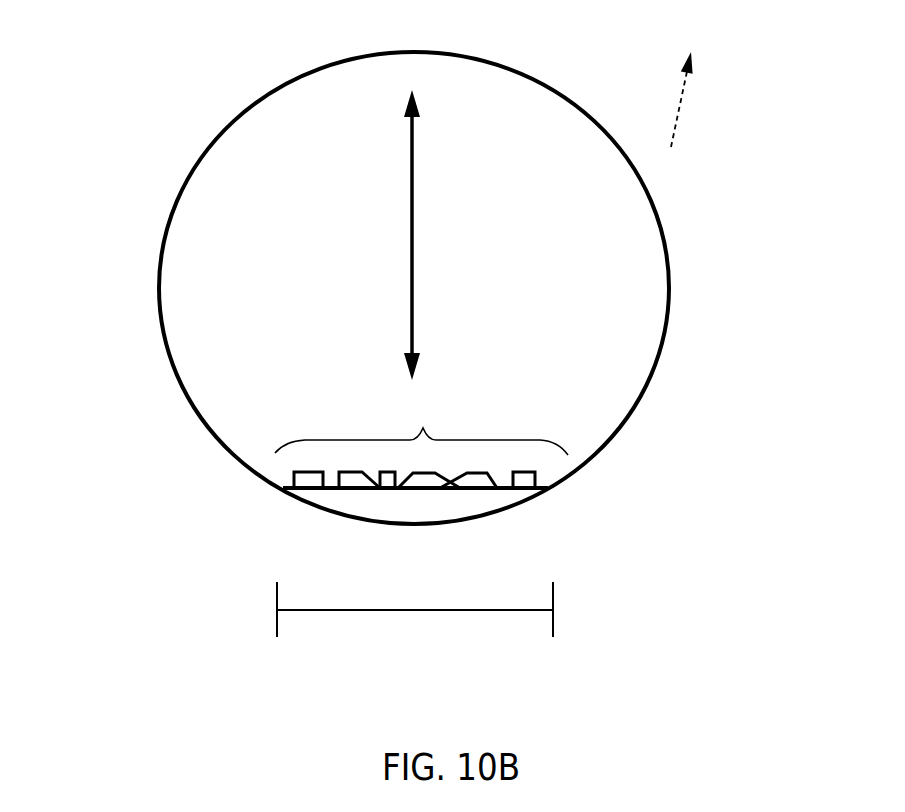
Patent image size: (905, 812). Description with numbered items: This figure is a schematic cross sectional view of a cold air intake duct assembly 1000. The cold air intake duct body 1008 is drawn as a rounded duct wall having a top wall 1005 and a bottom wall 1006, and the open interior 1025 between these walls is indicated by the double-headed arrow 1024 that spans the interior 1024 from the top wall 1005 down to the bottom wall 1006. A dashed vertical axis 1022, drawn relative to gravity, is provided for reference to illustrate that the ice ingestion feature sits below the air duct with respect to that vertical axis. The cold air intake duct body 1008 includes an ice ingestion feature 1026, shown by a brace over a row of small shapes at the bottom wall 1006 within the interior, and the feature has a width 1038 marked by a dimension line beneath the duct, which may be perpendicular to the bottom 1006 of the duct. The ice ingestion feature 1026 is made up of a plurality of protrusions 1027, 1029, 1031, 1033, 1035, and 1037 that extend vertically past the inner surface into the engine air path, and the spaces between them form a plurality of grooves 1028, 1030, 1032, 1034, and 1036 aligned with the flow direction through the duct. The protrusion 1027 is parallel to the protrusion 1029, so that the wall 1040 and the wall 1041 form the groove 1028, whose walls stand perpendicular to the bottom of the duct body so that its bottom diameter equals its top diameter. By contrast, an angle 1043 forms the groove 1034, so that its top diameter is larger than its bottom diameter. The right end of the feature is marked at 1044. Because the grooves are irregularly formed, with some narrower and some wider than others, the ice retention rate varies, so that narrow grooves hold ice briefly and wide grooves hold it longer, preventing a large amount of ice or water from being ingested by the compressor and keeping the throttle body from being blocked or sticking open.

The cold air intake duct assembly 1000 is at (127, 70).
The top wall 1005 is at (443, 52).
The bottom wall 1006 is at (443, 489).
The cold air intake duct body 1008 is at (197, 125).
The vertical axis 1022 is at (675, 118).
The interior 1024 is at (412, 223).
The interior 1025 is at (287, 113).
The ice ingestion feature 1026 is at (423, 428).
The protrusion 1027 is at (290, 486).
The groove 1028 is at (312, 490).
The protrusion 1029 is at (363, 480).
The groove 1030 is at (376, 482).
The protrusion 1031 is at (385, 478).
The groove 1032 is at (393, 485).
The protrusion 1033 is at (423, 478).
The groove 1034 is at (425, 478).
The protrusion 1035 is at (481, 472).
The groove 1036 is at (503, 490).
The protrusion 1037 is at (533, 490).
The width 1038 is at (442, 610).
The wall 1040 is at (322, 471).
The wall 1041 is at (340, 472).
The angle 1043 is at (470, 492).
The array end 1044 is at (568, 455).